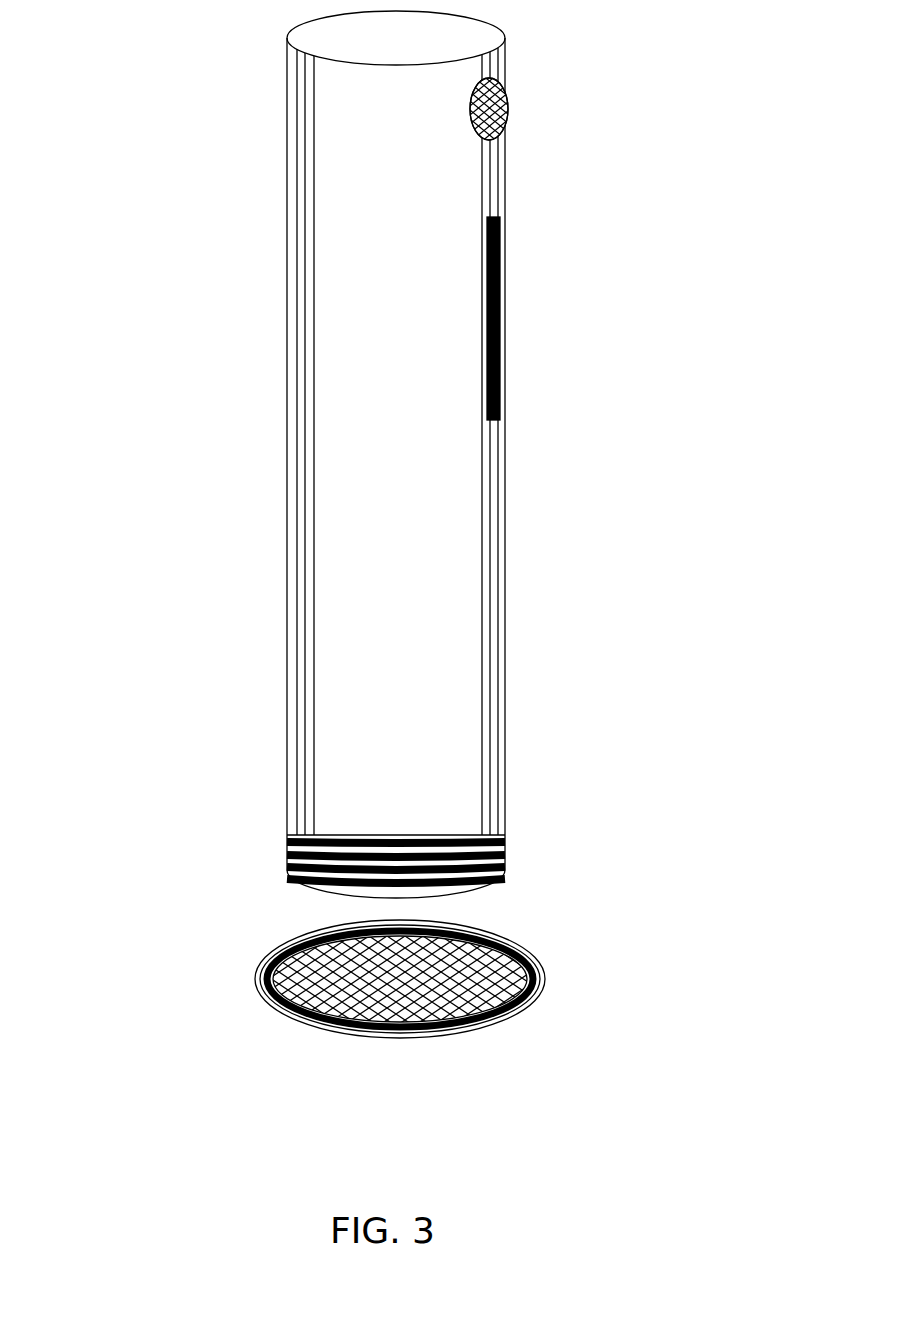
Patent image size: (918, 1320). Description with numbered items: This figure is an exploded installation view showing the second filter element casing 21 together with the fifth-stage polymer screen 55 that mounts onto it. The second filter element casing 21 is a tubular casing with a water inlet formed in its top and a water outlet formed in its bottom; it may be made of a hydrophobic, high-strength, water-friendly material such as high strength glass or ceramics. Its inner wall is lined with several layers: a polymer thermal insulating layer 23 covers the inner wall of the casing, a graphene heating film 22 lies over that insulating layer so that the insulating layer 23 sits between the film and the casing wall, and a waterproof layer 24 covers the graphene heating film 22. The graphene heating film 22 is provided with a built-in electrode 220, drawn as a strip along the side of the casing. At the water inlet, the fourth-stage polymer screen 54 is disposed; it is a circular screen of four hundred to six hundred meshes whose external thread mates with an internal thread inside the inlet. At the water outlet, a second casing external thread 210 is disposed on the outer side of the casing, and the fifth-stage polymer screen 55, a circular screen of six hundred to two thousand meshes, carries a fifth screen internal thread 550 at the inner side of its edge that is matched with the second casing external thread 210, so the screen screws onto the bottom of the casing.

The second filter element casing 21 is at (337, 548).
The second casing external thread 210 is at (290, 845).
The graphene heating film 22 is at (494, 475).
The built-in electrode 220 is at (497, 322).
The polymer thermal insulating layer 23 is at (500, 532).
The waterproof layer 24 is at (488, 673).
The fourth-stage polymer screen 54 is at (485, 110).
The fifth-stage polymer screen 55 is at (345, 978).
The fifth screen internal thread 550 is at (545, 975).